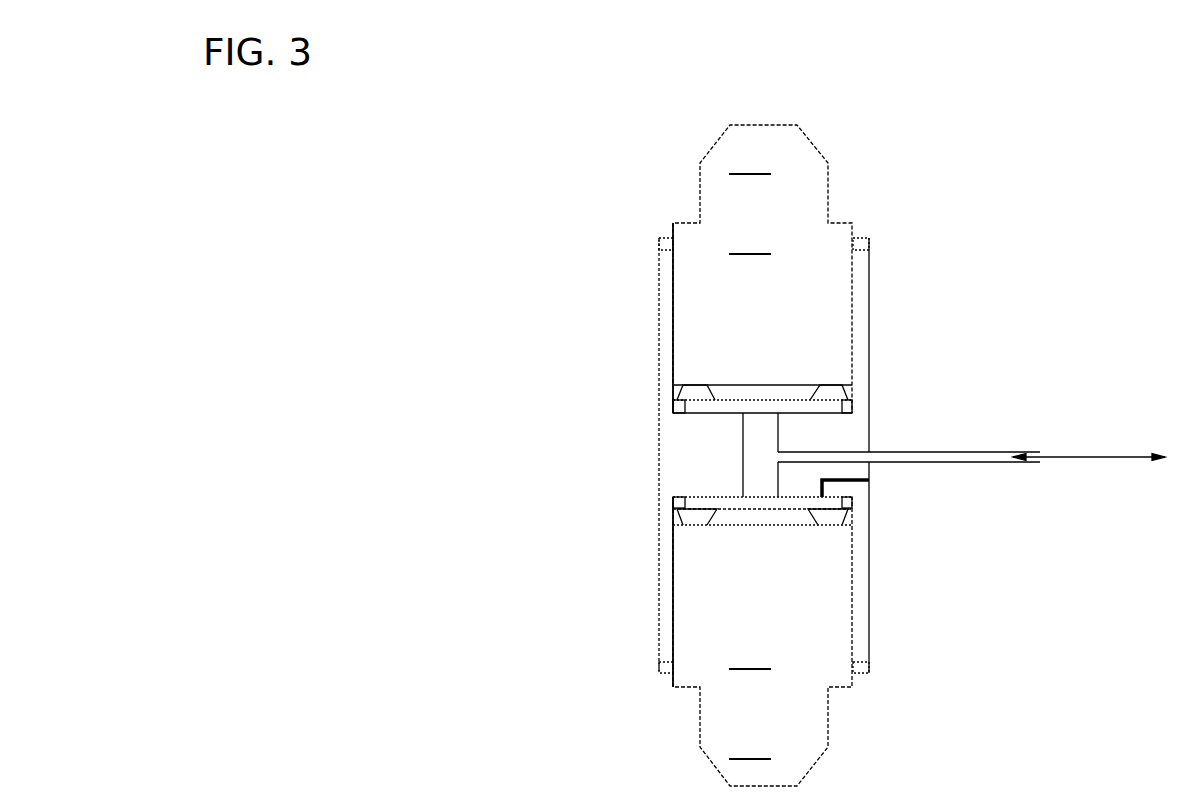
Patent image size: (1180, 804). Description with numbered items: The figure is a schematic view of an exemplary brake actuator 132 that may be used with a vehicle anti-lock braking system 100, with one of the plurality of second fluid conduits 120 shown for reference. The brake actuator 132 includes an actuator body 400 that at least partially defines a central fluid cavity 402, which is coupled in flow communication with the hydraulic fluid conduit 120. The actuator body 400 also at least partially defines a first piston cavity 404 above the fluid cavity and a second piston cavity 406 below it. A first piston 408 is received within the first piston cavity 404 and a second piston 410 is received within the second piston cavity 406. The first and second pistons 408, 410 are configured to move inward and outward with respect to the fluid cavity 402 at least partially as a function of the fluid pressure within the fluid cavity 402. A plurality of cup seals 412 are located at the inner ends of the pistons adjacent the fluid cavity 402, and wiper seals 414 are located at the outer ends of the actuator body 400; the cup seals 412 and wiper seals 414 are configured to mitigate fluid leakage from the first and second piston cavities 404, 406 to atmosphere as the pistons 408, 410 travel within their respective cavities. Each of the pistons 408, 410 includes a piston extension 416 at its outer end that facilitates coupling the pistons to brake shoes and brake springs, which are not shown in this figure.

The vehicle anti-lock braking system 100 is at (510, 173).
The brake actuator 132 is at (475, 220).
The second fluid conduit 120 is at (976, 452).
The actuator body 400 is at (658, 353).
The fluid cavity 402 is at (758, 453).
The first piston cavity 404 is at (673, 270).
The second piston cavity 406 is at (679, 571).
The first piston 408 is at (762, 269).
The second piston 410 is at (762, 641).
The cup seal 412 is at (674, 400).
The wiper seal 414 is at (660, 239).
The piston extension 416 is at (750, 453).